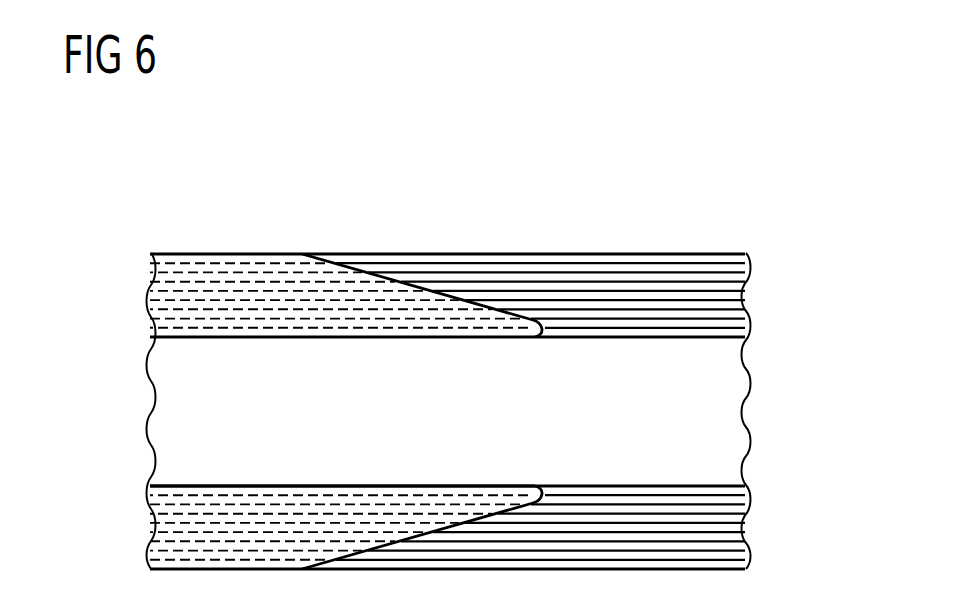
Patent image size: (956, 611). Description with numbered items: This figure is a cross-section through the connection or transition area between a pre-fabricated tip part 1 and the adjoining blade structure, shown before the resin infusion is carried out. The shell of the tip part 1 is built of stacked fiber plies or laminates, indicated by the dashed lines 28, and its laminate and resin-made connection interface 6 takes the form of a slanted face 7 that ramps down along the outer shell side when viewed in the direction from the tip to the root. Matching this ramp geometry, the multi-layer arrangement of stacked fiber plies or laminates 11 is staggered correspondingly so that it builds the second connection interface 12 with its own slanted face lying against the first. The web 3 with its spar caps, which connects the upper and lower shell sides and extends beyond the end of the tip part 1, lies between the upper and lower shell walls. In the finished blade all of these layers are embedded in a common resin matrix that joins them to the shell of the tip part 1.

The pre-fabricated tip part 1 is at (207, 237).
The web 3 is at (725, 390).
The connection interface 6 is at (432, 295).
The slanted face 7 is at (389, 275).
The stacked fiber plies or laminates 11 is at (640, 283).
The second connection interface 12 is at (459, 290).
The dashed lines 28 is at (222, 320).